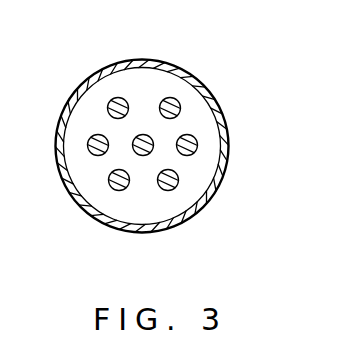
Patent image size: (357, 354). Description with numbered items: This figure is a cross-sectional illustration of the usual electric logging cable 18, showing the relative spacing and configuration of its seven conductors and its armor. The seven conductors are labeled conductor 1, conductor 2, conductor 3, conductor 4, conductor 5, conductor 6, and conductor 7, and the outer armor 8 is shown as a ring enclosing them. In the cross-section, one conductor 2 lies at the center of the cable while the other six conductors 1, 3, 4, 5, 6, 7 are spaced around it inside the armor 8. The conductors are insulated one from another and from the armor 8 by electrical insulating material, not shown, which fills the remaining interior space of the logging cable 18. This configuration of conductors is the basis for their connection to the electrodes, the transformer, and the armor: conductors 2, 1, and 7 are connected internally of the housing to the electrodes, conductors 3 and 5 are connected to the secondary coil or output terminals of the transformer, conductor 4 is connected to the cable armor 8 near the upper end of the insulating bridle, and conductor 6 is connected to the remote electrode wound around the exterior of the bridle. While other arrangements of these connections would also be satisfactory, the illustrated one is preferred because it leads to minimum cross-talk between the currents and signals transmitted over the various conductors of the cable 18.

The cable conductor 1 is at (117, 189).
The cable conductor 2 is at (143, 156).
The cable conductor 3 is at (91, 153).
The cable conductor 4 is at (180, 103).
The cable conductor 5 is at (178, 186).
The cable conductor 6 is at (112, 98).
The cable conductor 7 is at (199, 145).
The armor 8 is at (168, 63).
The electric logging cable 18 is at (228, 120).